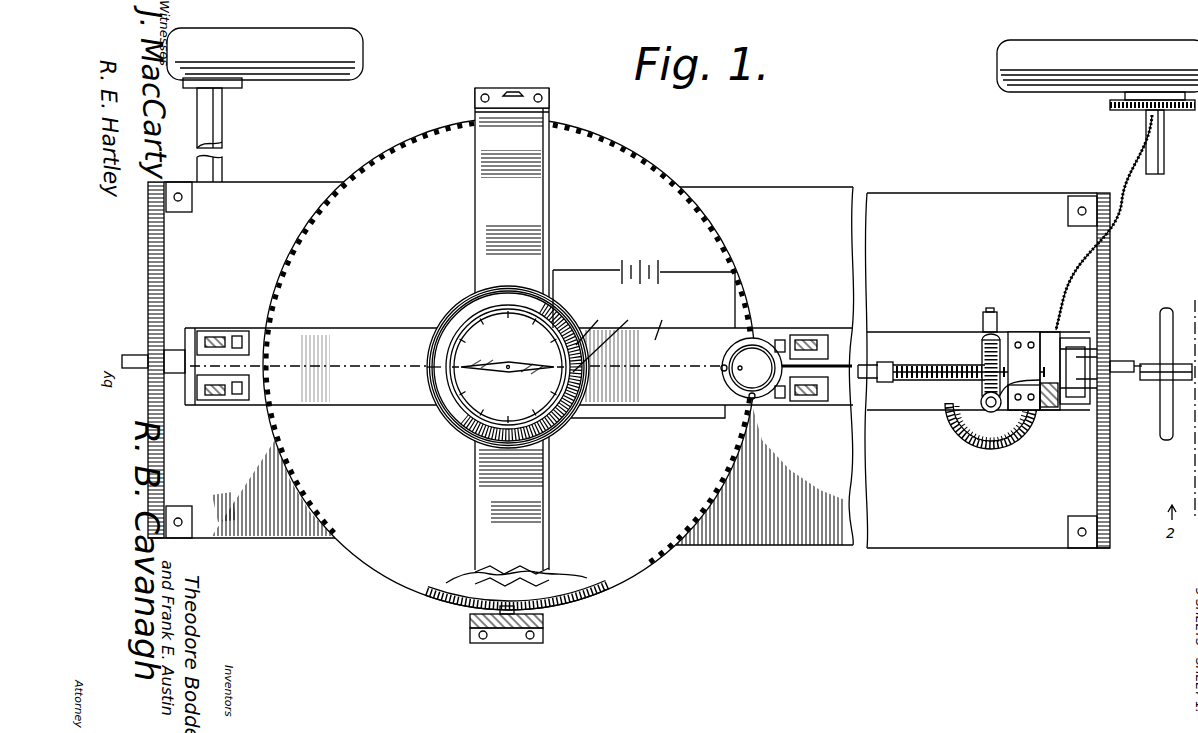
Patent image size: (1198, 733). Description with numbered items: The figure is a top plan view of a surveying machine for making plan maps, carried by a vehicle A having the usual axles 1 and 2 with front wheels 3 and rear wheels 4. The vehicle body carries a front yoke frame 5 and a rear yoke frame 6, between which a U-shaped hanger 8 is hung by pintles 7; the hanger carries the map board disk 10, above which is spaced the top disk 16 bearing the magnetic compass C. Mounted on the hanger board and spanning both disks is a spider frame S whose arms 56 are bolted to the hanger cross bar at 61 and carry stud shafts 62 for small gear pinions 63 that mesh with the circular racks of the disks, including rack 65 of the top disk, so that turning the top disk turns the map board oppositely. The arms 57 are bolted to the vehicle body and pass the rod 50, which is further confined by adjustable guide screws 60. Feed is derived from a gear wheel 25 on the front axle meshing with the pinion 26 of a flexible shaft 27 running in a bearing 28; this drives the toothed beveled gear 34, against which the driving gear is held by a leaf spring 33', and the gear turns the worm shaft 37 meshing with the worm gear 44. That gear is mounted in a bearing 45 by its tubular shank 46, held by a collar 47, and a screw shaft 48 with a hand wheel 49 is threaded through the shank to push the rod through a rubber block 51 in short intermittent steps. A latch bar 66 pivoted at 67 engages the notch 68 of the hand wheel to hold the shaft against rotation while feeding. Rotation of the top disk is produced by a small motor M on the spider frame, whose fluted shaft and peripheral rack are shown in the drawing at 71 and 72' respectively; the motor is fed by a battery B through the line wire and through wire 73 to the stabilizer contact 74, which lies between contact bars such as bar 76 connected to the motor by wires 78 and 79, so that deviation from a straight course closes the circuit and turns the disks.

The front axle 1 is at (1150, 160).
The rear axle 2 is at (222, 123).
The front wheels 3 is at (1002, 52).
The rear wheels 4 is at (362, 48).
The front yoke frame 5 is at (1096, 466).
The rear yoke frame 6 is at (164, 468).
The pintles 7 is at (132, 352).
The U-shaped hanger 8 is at (192, 326).
The disk 10 is at (480, 590).
The top disk 16 is at (670, 188).
The gear wheel 25 is at (1108, 106).
The pinion 26 is at (1155, 110).
The flexible shaft 27 is at (1118, 210).
The bearing 28 is at (1048, 330).
The leaf spring 33' is at (977, 303).
The beveled gear 34 is at (960, 420).
The worm shaft 37 is at (980, 420).
The worm gear 44 is at (984, 350).
The bearing 45 is at (1015, 415).
The tubular shank 46 is at (990, 412).
The collar 47 is at (1052, 410).
The screw shaft 48 is at (955, 366).
The hand wheel 49 is at (1172, 316).
The rod 50 is at (884, 360).
The rubber block 51 is at (874, 410).
The arms 56 is at (551, 192).
The arms 57 is at (372, 326).
The adjustable guide screws 60 is at (230, 328).
The bolting point 61 is at (551, 102).
The stud shafts 62 is at (513, 643).
The gear pinions 63 is at (536, 600).
The circular rack 65 is at (598, 605).
The latch bar 66 is at (1124, 380).
The pivot 67 is at (1100, 340).
The notch 68 is at (1163, 410).
The compass needle 71 is at (562, 400).
The circuit wire 72' is at (694, 264).
The wire 73 is at (556, 272).
The contact 74 is at (611, 335).
The contact bar 76 is at (598, 322).
The conducting wire 78 is at (667, 319).
The conducting wire 79 is at (632, 420).
The vehicle A is at (987, 398).
The battery B is at (655, 262).
The magnetic compass C is at (548, 320).
The motor M is at (746, 366).
The spider frame S is at (430, 405).